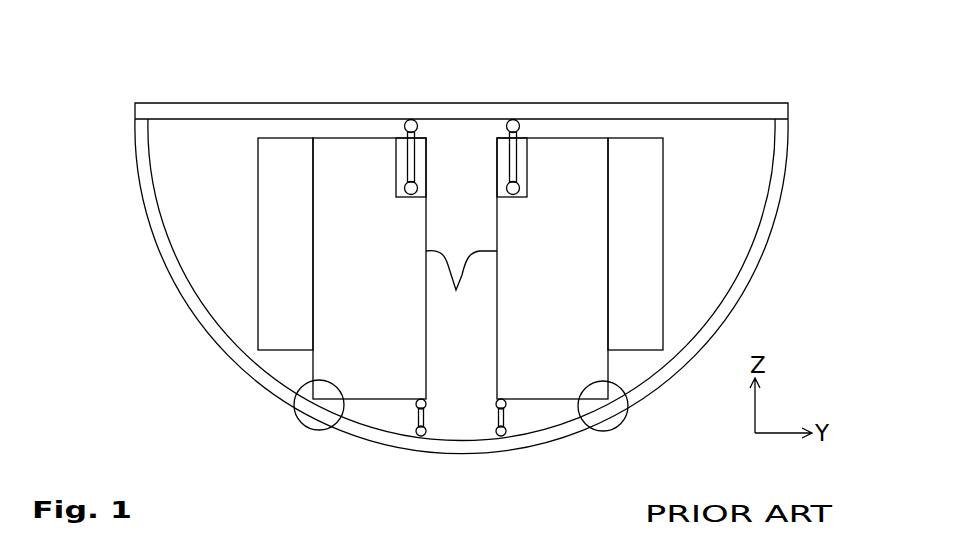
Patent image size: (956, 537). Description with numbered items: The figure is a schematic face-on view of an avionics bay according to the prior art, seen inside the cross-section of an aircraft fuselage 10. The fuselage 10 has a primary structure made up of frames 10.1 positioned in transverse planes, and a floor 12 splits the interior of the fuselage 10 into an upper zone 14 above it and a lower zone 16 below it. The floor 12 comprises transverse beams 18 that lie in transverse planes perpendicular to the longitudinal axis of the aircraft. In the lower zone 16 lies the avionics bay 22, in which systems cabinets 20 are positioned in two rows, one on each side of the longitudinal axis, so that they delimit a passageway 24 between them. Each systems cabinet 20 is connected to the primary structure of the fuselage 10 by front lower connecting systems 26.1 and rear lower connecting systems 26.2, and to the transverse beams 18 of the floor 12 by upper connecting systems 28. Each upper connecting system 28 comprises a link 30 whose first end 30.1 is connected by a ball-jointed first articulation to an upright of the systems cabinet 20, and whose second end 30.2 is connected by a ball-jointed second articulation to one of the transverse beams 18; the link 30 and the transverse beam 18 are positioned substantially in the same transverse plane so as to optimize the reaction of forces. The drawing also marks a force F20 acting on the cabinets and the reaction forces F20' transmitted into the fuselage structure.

The fuselage 10 is at (459, 228).
The frames 10.1 is at (777, 212).
The floor 12 is at (192, 103).
The upper zone 14 is at (490, 89).
The lower zone 16 is at (460, 220).
The transverse beams 18 is at (667, 113).
The systems cabinets 20 is at (327, 315).
The avionics bay 22 is at (725, 200).
The passageway 24 is at (456, 390).
The front lower connecting systems 26.1 is at (403, 432).
The rear lower connecting systems 26.2 is at (295, 427).
The upper connecting systems 28 is at (403, 165).
The link 30 is at (438, 112).
The first end 30.1 is at (420, 192).
The second end 30.2 is at (405, 122).
The force on light module F20 is at (461, 287).
The reaction force F20' is at (450, 244).